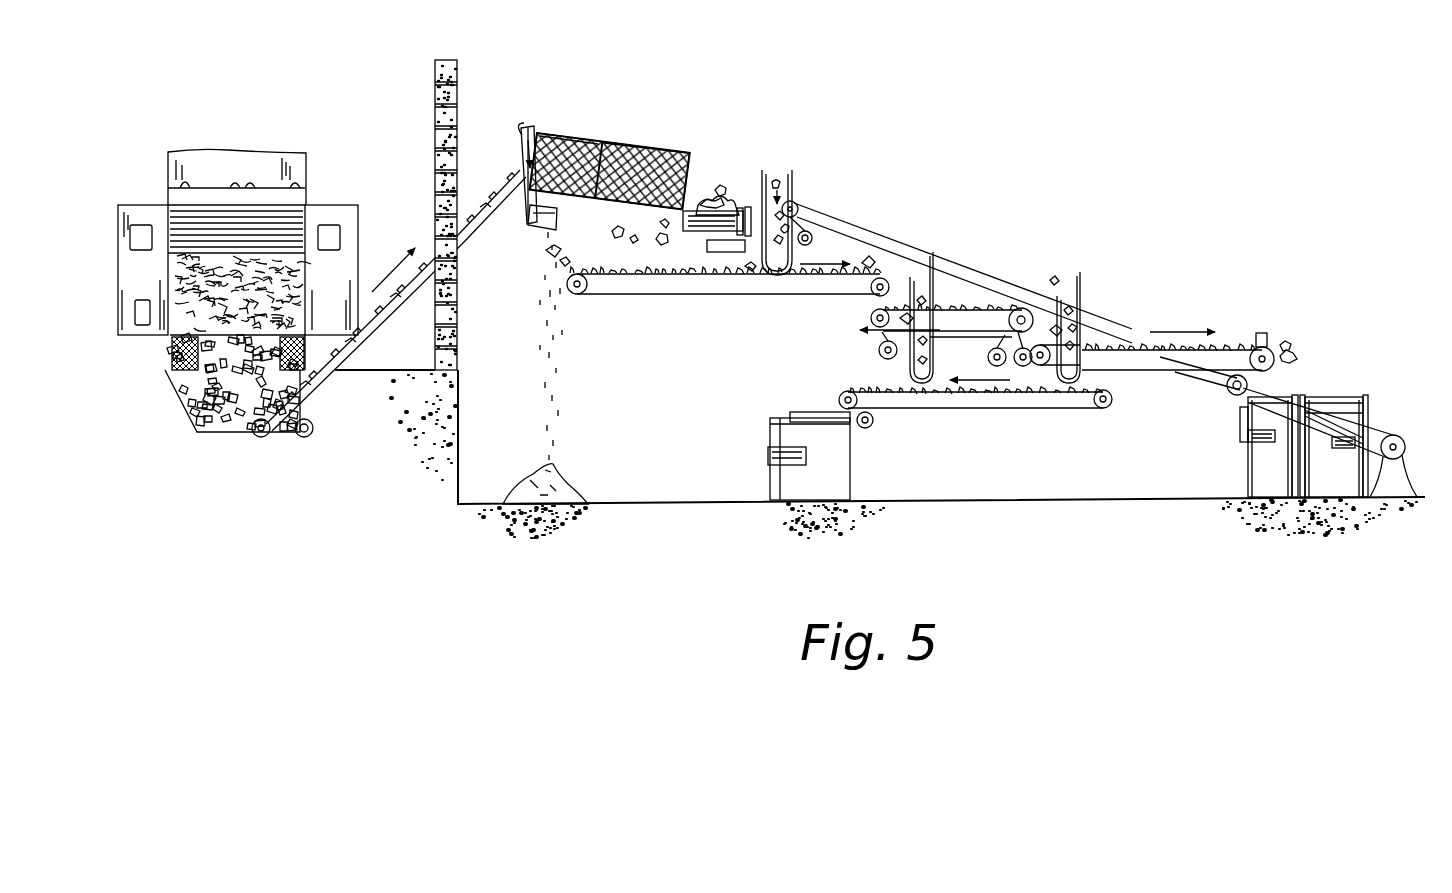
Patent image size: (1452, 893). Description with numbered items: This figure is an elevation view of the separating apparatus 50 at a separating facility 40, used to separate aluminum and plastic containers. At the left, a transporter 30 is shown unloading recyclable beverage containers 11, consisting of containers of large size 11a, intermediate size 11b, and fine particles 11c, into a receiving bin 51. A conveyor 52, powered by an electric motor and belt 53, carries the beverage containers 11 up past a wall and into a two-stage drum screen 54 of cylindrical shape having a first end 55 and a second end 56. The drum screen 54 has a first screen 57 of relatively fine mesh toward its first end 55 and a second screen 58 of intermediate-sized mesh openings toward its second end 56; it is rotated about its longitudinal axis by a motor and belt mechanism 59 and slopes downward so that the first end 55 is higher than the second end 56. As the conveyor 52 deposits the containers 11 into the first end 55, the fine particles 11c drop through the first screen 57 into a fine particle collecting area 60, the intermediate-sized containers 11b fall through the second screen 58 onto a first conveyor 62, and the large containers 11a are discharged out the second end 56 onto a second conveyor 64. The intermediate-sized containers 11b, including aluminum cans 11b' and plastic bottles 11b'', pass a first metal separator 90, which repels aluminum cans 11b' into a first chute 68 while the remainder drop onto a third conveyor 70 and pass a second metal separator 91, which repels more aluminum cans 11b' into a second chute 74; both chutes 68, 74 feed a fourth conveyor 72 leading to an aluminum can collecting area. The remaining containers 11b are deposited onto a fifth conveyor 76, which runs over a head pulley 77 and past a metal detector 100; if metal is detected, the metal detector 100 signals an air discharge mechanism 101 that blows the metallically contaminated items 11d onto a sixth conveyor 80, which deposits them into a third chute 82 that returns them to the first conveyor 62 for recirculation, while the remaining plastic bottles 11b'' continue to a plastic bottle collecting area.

The recyclable beverage containers 11 is at (165, 345).
The containers of large size 11a is at (735, 188).
The containers of intermediate size 11b is at (607, 234).
The aluminum cans 11b' is at (937, 383).
The plastic bottles 11b'' is at (1223, 430).
The fine particles 11c is at (547, 350).
The metallically contaminated items 11d is at (781, 189).
The transporter 30 is at (288, 138).
The separating facility 40 is at (384, 74).
The separating apparatus 50 is at (1236, 263).
The receiving bin 51 is at (172, 398).
The conveyor 52 is at (416, 308).
The electric motor and belt 53 is at (286, 440).
The two-stage drum screen 54 is at (612, 114).
The first end 55 is at (520, 140).
The second end 56 is at (690, 160).
The first screen 57 is at (586, 131).
The second screen 58 is at (643, 150).
The motor and belt mechanism 59 is at (533, 230).
The fine particle collecting area 60 is at (510, 490).
The first conveyor 62 is at (708, 298).
The second conveyor 64 is at (746, 192).
The first chute 68 is at (920, 282).
The third conveyor 70 is at (973, 298).
The fourth conveyor 72 is at (952, 412).
The second chute 74 is at (1105, 334).
The fifth conveyor 76 is at (1162, 362).
The head pulley 77 is at (1239, 344).
The sixth conveyor 80 is at (916, 227).
The third chute 82 is at (774, 270).
The first metal separator 90 is at (871, 258).
The second metal separator 91 is at (1058, 300).
The metal detector 100 is at (1270, 320).
The air discharge mechanism 101 is at (1331, 390).